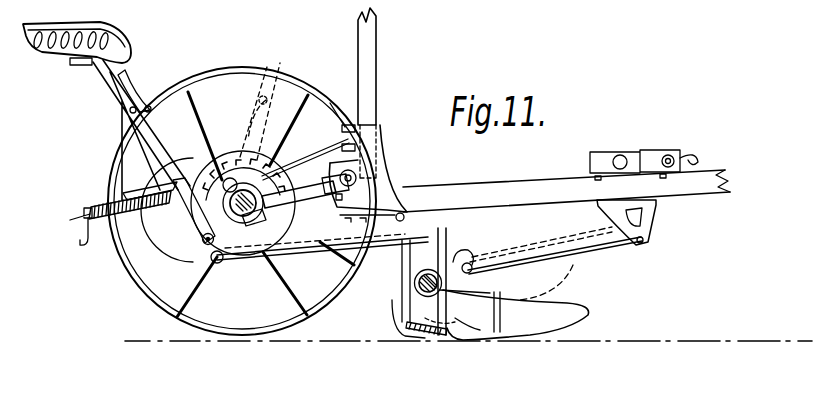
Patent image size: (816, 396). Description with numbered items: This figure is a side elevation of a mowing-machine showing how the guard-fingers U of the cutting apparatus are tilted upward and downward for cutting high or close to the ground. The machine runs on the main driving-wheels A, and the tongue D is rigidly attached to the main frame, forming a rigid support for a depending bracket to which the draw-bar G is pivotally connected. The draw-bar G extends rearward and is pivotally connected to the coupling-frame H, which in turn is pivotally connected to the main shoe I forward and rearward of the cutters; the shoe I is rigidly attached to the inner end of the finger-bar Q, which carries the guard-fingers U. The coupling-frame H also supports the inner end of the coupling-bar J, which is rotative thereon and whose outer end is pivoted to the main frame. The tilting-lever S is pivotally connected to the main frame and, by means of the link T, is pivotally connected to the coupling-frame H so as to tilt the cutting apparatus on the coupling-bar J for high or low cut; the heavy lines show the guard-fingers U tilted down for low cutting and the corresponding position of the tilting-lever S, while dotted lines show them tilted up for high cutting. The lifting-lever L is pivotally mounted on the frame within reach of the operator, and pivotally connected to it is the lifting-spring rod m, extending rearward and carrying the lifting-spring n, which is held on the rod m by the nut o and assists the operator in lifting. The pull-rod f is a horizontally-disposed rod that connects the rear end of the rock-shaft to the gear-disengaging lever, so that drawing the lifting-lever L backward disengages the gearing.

The main driving-wheels A is at (250, 334).
The tilting-lever S is at (152, 146).
The lifting-spring n is at (140, 212).
The nut o is at (93, 243).
The link T is at (318, 249).
The lifting-spring rod m is at (304, 164).
The lifting-lever L is at (372, 82).
The tongue D is at (566, 191).
The pull-rod f is at (656, 218).
The draw-bar G is at (578, 260).
The coupling-frame H is at (470, 262).
The coupling-bar J is at (413, 283).
The main shoe I is at (517, 336).
The finger-bar Q is at (430, 336).
The guard-fingers U is at (470, 334).